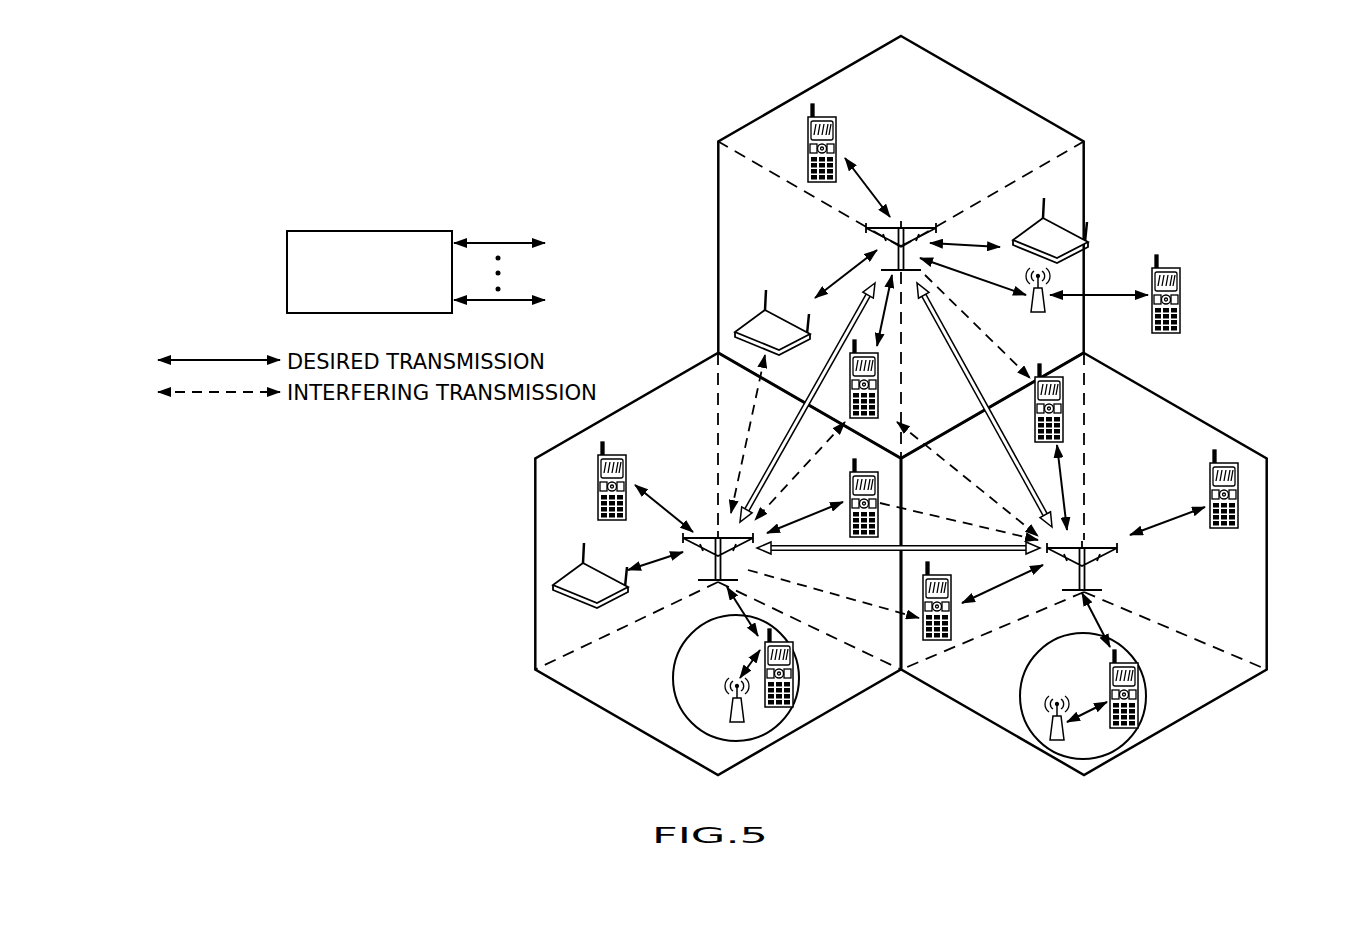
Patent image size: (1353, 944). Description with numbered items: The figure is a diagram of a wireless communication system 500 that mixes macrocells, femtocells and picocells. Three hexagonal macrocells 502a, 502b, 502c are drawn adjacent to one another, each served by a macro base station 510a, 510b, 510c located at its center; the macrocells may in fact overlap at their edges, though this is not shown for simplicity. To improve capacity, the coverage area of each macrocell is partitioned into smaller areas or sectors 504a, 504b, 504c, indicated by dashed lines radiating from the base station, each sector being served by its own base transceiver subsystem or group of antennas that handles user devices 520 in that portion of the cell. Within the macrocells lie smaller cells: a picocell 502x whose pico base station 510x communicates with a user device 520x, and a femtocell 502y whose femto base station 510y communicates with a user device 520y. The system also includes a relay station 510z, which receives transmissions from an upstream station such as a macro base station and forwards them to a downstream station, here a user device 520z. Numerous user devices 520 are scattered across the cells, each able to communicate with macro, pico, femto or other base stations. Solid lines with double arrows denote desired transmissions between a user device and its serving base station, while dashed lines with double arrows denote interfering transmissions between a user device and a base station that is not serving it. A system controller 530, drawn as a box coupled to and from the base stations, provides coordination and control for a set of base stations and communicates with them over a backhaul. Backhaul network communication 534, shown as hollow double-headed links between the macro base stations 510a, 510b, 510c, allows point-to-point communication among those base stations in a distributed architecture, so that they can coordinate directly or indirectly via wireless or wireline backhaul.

The wireless communication system 500 is at (425, 75).
The macrocell 502a is at (944, 62).
The macrocell 502b is at (665, 385).
The macrocell 502c is at (1150, 393).
The picocell 502x is at (688, 637).
The femtocell 502y is at (1030, 655).
The sector 504a is at (919, 83).
The sector 504b is at (771, 205).
The sector 504c is at (1079, 193).
The macro base station 510a is at (910, 222).
The macro base station 510b is at (712, 535).
The macro base station 510c is at (1090, 545).
The pico base station 510x is at (747, 718).
The femto base station 510y is at (1063, 738).
The relay station 510z is at (1048, 305).
The user device 520 is at (808, 125).
The user device 520x is at (795, 662).
The user device 520y is at (1138, 672).
The user device 520z is at (1180, 276).
The system controller 530 is at (388, 306).
The backhaul network communication 534 is at (805, 417).